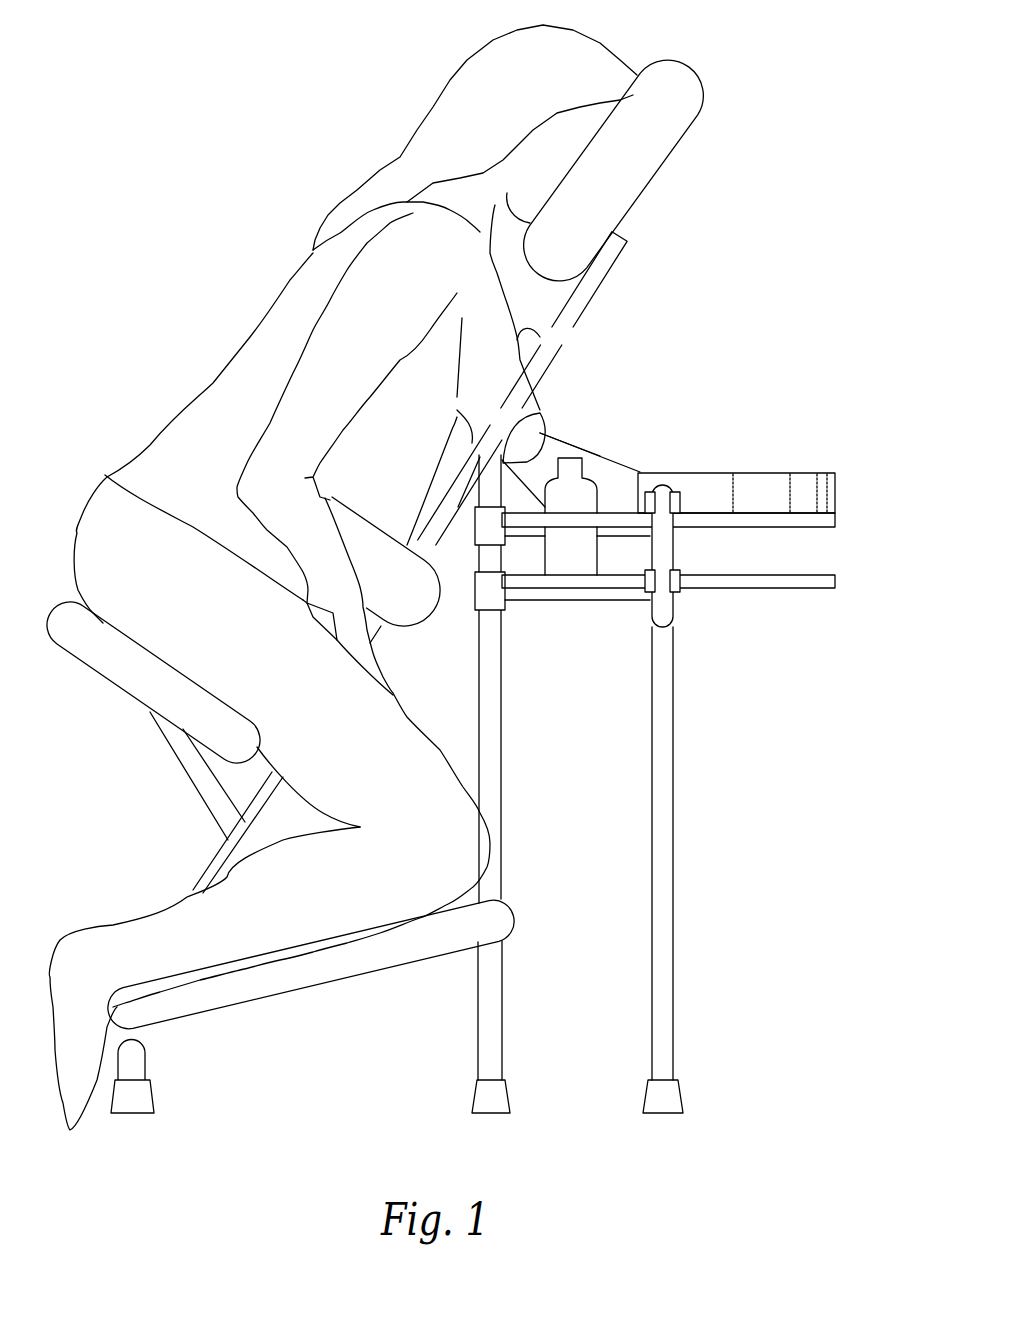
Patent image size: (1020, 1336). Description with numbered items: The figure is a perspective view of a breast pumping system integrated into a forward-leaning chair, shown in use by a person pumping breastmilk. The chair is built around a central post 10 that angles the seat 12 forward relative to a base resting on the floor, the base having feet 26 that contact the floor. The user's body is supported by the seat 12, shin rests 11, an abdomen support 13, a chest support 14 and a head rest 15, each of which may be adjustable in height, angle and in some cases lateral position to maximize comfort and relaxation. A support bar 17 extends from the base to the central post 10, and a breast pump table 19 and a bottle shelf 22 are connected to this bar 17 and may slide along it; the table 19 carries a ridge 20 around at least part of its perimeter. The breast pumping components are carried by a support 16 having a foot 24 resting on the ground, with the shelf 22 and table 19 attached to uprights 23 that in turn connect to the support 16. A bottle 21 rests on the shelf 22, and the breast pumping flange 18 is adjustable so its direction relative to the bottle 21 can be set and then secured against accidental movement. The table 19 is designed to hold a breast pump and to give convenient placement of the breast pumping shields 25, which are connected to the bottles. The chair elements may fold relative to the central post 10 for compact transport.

The central post 10 is at (603, 278).
The shin rests 11 is at (300, 973).
The seat 12 is at (116, 667).
The abdomen support 13 is at (417, 607).
The chest support 14 is at (537, 340).
The head rest 15 is at (647, 163).
The support 16 is at (673, 860).
The support bar 17 is at (505, 783).
The breast pumping flange 18 is at (553, 422).
The breast pump table 19 is at (802, 440).
The ridge 20 is at (836, 493).
The bottle 21 is at (558, 562).
The bottle shelf 22 is at (782, 590).
The uprights 23 is at (675, 550).
The foot 24 is at (681, 1095).
The breast pumping shields 25 is at (548, 455).
The feet 26 is at (150, 1094).